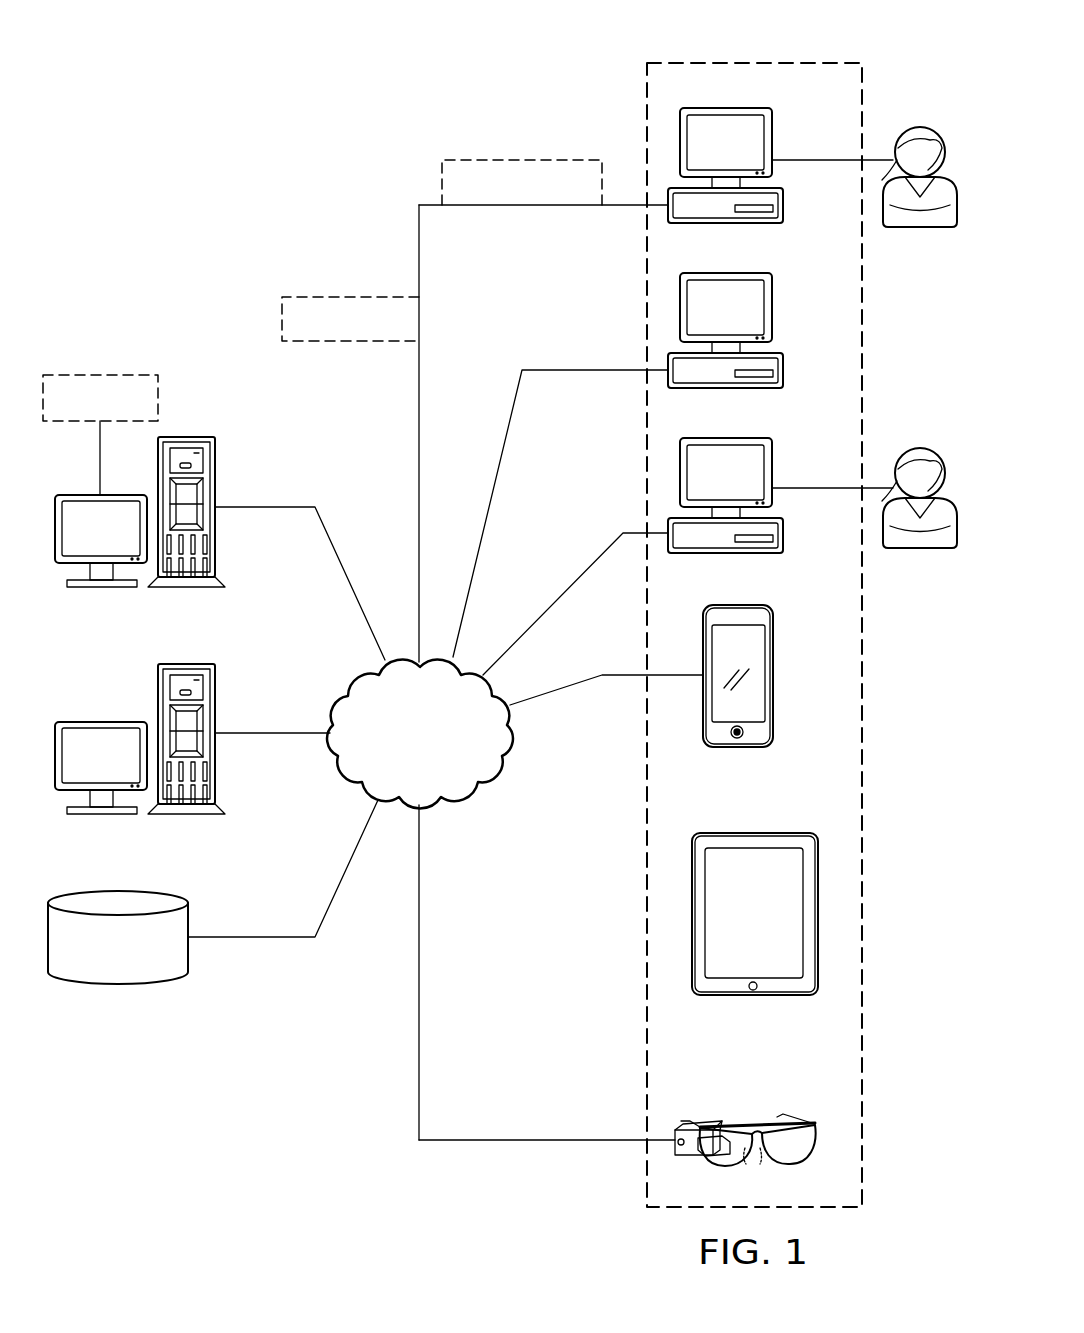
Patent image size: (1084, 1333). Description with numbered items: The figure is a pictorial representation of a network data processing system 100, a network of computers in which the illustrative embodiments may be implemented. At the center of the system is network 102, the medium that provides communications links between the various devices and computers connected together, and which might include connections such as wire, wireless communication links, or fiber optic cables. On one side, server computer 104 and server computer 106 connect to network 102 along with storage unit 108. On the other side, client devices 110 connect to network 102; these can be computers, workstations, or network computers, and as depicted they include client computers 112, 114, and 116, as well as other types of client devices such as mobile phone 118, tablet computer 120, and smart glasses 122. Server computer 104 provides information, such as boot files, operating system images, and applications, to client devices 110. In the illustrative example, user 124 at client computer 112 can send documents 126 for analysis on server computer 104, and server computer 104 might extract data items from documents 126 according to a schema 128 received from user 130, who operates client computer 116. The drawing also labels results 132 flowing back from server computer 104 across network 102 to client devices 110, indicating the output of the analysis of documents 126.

The network data processing system 100 is at (155, 88).
The network 102 is at (440, 765).
The server computer 104 is at (80, 495).
The server computer 106 is at (100, 720).
The storage unit 108 is at (118, 983).
The client devices 110 is at (795, 64).
The client computer 112 is at (773, 143).
The client computer 114 is at (773, 308).
The client computer 116 is at (773, 473).
The mobile phone 118 is at (773, 693).
The tablet computer 120 is at (776, 930).
The smart glasses 122 is at (800, 1118).
The user 124 is at (920, 127).
The documents 126 is at (442, 168).
The schema 128 is at (100, 374).
The user 130 is at (920, 448).
The results 132 is at (282, 305).